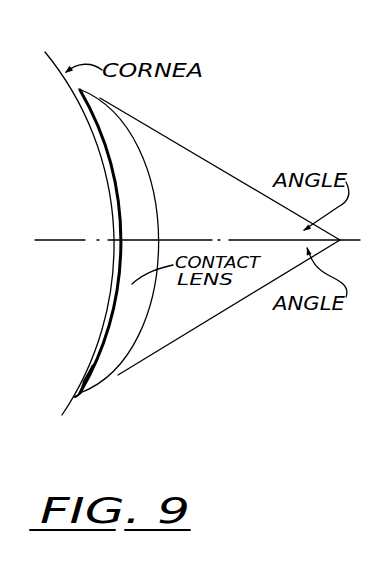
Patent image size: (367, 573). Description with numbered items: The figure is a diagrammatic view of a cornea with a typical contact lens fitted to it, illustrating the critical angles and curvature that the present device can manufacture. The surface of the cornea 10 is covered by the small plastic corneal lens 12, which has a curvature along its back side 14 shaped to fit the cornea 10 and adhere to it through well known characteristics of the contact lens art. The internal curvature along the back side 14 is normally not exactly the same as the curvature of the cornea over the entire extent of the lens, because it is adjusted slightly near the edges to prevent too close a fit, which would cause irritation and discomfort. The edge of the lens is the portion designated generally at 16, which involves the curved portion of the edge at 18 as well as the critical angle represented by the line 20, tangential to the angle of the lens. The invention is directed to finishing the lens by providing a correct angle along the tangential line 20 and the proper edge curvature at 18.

The cornea 10 is at (128, 260).
The corneal lens 12 is at (131, 188).
The back side 14 is at (123, 228).
The edge 16 is at (82, 381).
The curved portion of the edge 18 is at (77, 406).
The line 20 is at (175, 340).